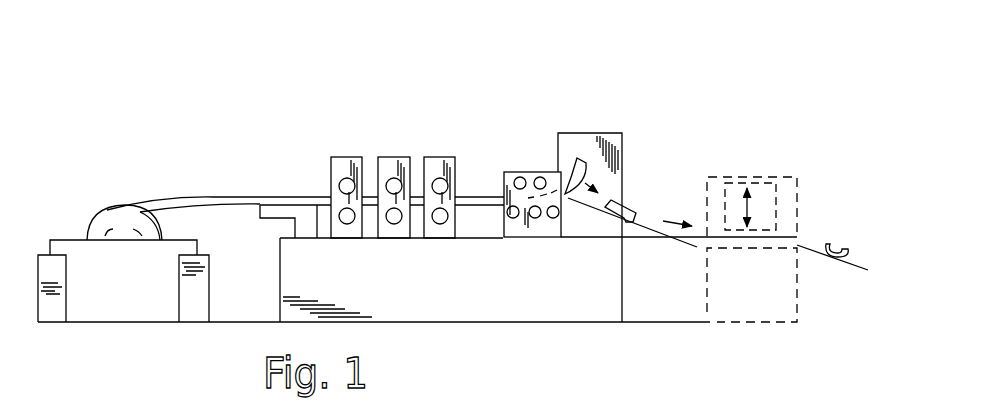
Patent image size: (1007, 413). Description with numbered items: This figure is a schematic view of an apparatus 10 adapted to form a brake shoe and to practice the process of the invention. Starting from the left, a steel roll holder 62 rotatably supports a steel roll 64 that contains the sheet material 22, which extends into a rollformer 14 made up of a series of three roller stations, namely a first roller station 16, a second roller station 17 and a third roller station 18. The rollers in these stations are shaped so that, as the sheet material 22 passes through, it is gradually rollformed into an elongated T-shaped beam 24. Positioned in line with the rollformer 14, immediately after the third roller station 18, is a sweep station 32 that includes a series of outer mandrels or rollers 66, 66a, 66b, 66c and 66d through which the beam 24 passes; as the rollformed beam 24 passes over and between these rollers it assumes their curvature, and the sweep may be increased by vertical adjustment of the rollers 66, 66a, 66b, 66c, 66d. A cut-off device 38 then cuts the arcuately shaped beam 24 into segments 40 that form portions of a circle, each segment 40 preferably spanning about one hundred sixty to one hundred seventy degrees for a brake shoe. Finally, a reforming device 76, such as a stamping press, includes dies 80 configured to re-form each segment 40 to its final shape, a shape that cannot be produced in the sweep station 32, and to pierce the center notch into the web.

The apparatus 10 is at (413, 60).
The rollformer 14 is at (357, 88).
The first roller station 16 is at (348, 157).
The second roller station 17 is at (397, 157).
The third roller station 18 is at (442, 157).
The sheet material 22 is at (212, 200).
The T-shaped beam 24 is at (482, 197).
The sweep station 32 is at (536, 172).
The cut-off device 38 is at (622, 167).
The segment 40 is at (584, 160).
The steel roll holder 62 is at (107, 310).
The steel roll 64 is at (108, 222).
The roller 66 is at (514, 218).
The roller 66a is at (535, 218).
The roller 66b is at (556, 218).
The roller 66c is at (519, 177).
The roller 66d is at (544, 178).
The reforming device 76 is at (807, 172).
The dies 80 is at (777, 213).